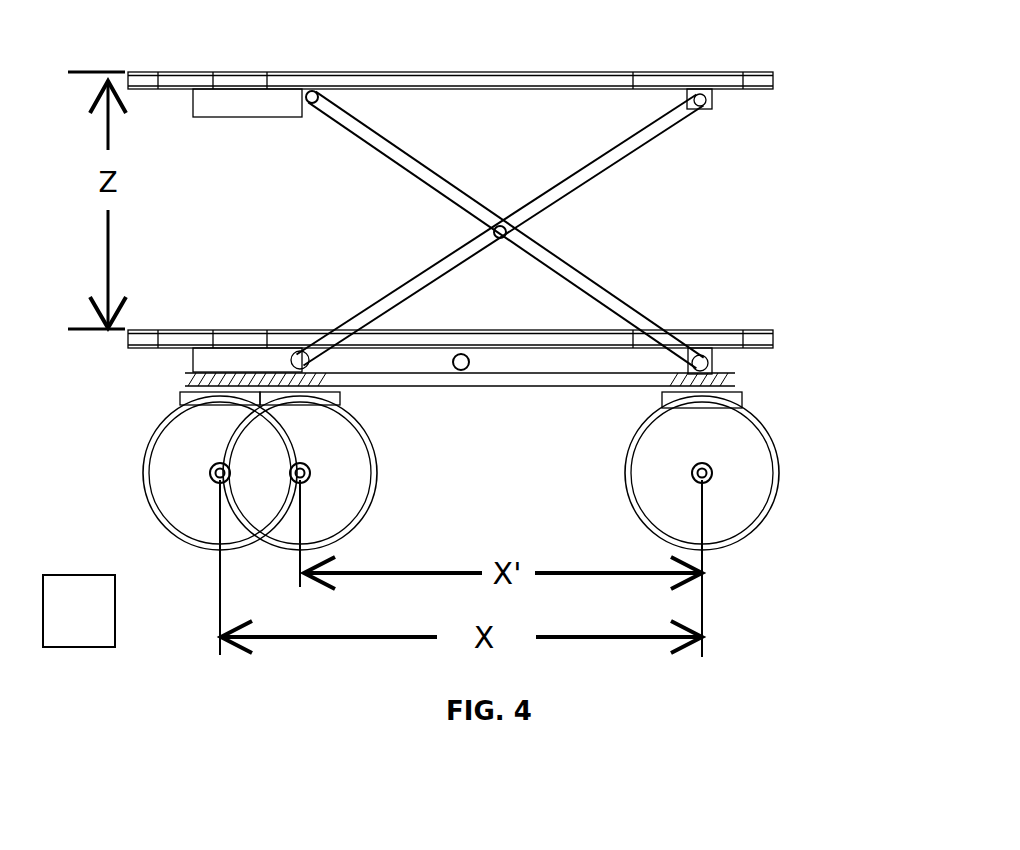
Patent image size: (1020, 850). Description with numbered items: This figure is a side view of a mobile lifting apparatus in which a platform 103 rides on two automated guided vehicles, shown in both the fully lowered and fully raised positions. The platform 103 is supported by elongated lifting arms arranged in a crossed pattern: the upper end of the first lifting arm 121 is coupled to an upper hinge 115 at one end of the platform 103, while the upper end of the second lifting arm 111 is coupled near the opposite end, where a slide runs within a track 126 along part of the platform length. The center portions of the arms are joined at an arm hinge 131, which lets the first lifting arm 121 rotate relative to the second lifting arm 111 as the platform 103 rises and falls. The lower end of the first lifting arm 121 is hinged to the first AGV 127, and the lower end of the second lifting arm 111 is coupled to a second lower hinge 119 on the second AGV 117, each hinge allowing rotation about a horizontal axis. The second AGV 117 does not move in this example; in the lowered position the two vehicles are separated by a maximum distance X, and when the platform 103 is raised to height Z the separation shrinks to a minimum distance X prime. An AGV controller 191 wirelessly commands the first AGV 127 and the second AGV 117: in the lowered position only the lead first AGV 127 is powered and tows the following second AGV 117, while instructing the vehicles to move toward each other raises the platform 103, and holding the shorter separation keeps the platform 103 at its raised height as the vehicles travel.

The platform 103 is at (552, 77).
The second lifting arm 111 is at (353, 155).
The upper hinge 115 is at (700, 98).
The second AGV 117 is at (756, 457).
The second lower hinge 119 is at (710, 362).
The first lifting arm 121 is at (618, 155).
The track 126 is at (223, 113).
The first AGV 127 is at (150, 462).
The arm hinge 131 is at (502, 222).
The AGV controller 191 is at (93, 620).